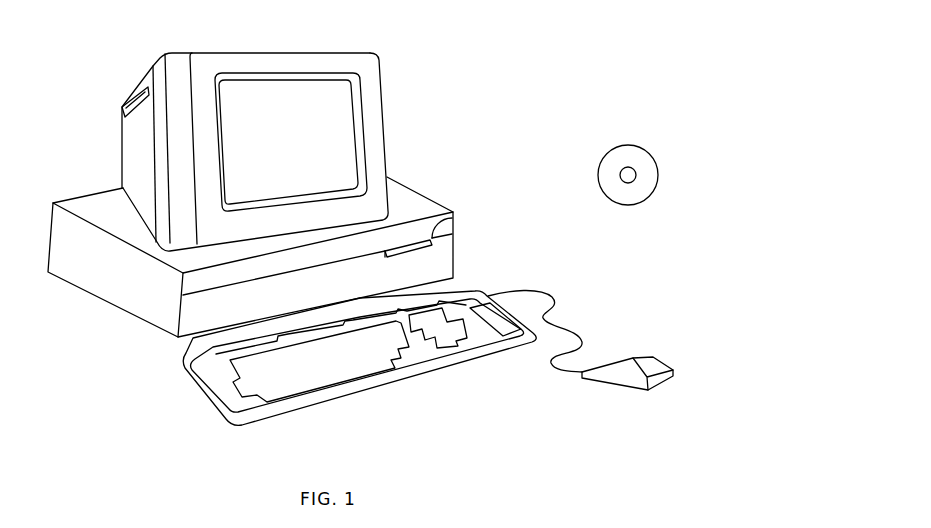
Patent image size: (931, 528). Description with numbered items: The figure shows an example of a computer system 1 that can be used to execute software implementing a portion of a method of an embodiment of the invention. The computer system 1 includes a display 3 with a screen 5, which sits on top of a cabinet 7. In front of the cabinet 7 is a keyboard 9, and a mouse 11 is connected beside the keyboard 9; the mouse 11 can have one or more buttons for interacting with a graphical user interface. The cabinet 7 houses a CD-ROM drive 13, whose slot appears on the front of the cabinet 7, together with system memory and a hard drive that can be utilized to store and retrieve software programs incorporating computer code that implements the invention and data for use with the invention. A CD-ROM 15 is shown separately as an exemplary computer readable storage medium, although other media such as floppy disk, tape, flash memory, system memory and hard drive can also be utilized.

The computer system 1 is at (557, 41).
The display 3 is at (382, 155).
The screen 5 is at (353, 107).
The cabinet 7 is at (140, 320).
The keyboard 9 is at (360, 391).
The mouse 11 is at (657, 358).
The CD-ROM drive 13 is at (455, 213).
The CD-ROM 15 is at (645, 150).